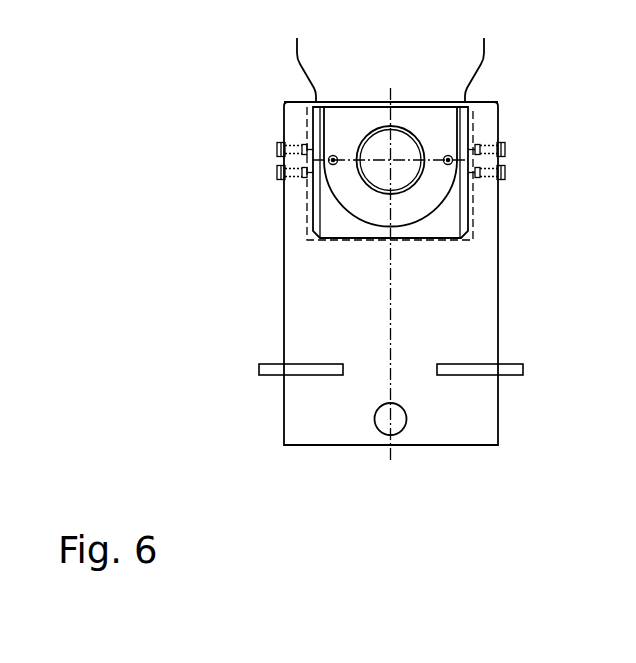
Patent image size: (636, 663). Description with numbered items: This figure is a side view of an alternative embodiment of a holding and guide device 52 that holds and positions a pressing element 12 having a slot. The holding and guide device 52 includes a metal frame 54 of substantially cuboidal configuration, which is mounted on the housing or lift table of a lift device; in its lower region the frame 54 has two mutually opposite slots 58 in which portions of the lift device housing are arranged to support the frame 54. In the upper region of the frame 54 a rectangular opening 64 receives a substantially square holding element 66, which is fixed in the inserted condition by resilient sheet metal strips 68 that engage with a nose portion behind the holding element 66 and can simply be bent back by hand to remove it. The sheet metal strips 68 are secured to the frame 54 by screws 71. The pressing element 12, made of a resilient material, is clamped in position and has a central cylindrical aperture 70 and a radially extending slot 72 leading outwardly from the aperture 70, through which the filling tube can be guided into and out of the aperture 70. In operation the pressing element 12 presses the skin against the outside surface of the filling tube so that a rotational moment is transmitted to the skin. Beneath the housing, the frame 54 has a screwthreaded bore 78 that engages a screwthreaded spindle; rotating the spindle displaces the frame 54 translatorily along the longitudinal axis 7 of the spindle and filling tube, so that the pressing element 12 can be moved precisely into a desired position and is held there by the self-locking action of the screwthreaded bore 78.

The holding and guide device 52 is at (149, 405).
The metal frame 54 is at (297, 310).
The slots 58 is at (267, 369).
The rectangular opening 64 is at (300, 219).
The holding element 66 is at (452, 208).
The resilient sheet metal strips 68 is at (297, 49).
The central cylindrical aperture 70 is at (375, 147).
The screws 71 is at (275, 172).
The slot 72 is at (390, 289).
The screwthreaded bore 78 is at (375, 419).
The pressing element 12 is at (375, 119).
The longitudinal axis 7 is at (392, 158).